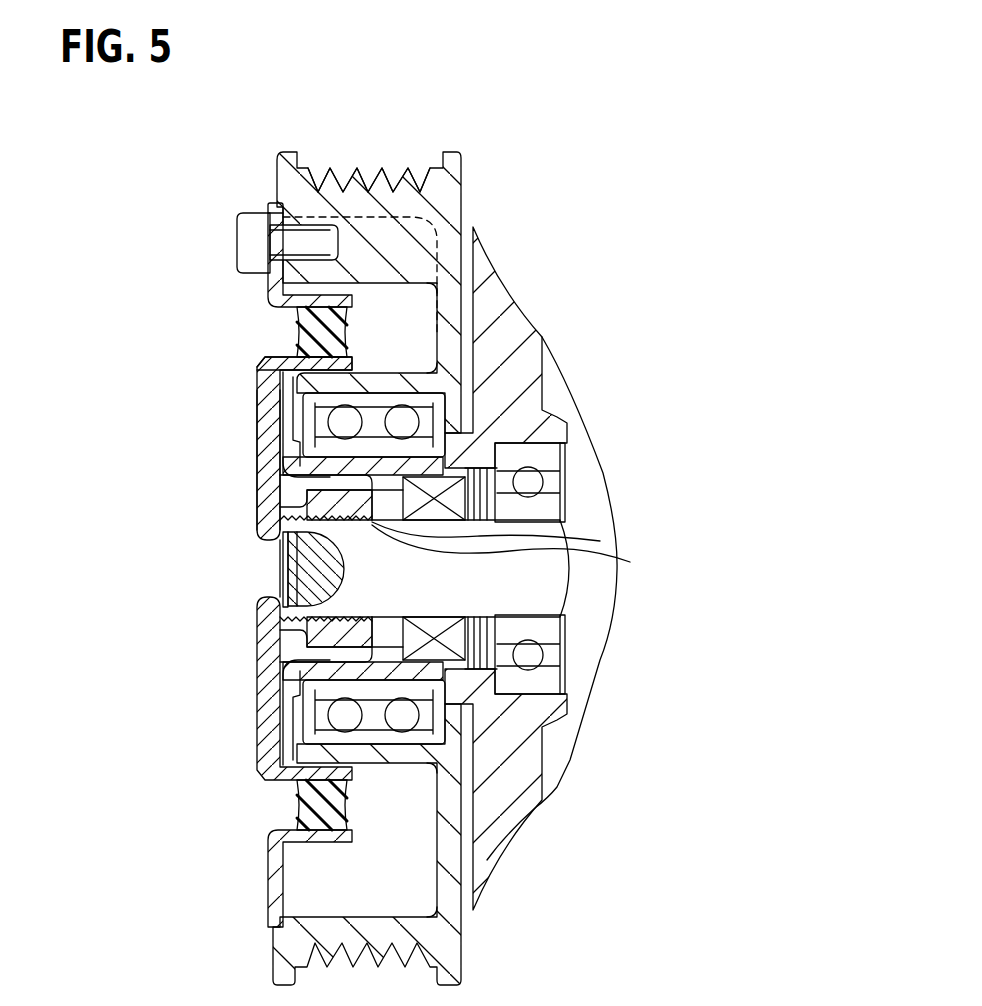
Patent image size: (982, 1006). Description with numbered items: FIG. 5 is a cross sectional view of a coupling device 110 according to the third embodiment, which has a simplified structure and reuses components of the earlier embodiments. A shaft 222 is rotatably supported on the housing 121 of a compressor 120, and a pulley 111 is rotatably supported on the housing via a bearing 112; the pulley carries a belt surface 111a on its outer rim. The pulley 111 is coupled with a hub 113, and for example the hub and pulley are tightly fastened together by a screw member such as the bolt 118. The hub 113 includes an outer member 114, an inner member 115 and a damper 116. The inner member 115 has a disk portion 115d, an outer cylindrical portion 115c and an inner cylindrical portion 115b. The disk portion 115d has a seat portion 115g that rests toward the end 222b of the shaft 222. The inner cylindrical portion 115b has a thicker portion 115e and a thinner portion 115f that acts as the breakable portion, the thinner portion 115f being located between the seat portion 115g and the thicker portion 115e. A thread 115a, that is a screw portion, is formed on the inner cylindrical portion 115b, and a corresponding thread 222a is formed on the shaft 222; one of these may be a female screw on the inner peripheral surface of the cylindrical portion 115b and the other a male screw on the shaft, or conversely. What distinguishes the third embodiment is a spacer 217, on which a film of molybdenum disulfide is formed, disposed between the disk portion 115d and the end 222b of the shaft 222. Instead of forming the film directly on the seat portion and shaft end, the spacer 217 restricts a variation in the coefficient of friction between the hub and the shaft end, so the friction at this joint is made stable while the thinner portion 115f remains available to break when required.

The coupling device 110 is at (450, 545).
The pulley 111 is at (400, 545).
The V-groove belt surface 111a is at (414, 167).
The bearing 112 is at (417, 393).
The hub 113 is at (400, 570).
The outer member 114 is at (273, 285).
The inner member 115 is at (424, 549).
The thread 115a is at (600, 541).
The inner cylindrical portion 115b is at (330, 490).
The outer cylindrical portion 115c is at (297, 352).
The disk portion 115d is at (257, 415).
The thicker portion 115e is at (293, 587).
The thinner portion 115f is at (293, 641).
The seat portion 115g is at (280, 518).
The damper 116 is at (297, 318).
The bolt 118 is at (255, 222).
The compressor 120 is at (523, 568).
The housing 121 is at (517, 423).
The spacer 217 is at (283, 567).
The shaft 222 is at (422, 568).
The thread 222a is at (525, 550).
The end of shaft 222b is at (282, 545).